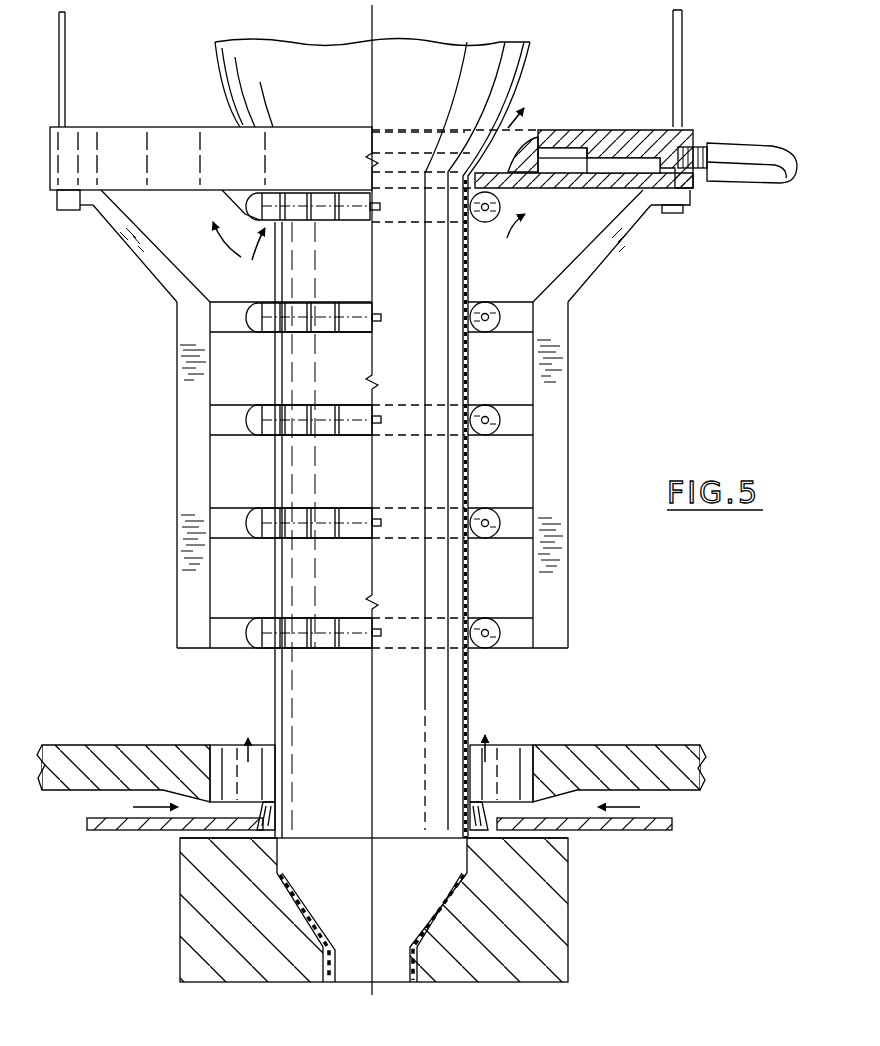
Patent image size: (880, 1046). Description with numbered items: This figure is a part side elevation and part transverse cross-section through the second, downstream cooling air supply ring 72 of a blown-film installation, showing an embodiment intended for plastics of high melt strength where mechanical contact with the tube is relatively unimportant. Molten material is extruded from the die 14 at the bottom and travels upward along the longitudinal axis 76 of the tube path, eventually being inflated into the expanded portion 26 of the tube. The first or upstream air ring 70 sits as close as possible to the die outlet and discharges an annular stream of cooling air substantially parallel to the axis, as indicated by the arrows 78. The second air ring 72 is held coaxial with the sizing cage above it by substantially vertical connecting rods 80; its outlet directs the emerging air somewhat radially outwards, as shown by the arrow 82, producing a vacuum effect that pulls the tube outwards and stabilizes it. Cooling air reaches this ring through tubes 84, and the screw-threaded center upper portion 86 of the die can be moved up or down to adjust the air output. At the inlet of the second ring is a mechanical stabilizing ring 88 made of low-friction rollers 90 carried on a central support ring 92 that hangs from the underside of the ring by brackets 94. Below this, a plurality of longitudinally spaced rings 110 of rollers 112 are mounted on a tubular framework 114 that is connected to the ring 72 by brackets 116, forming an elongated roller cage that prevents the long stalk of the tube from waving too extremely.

The die 14 is at (556, 877).
The expanded portion of the tube 26 is at (530, 50).
The first cooling air supply ring 70 is at (556, 748).
The second cooling air supply ring 72 is at (620, 130).
The longitudinal axis of the tube path 76 is at (372, 25).
The arrows indicating cooling air stream 78 is at (248, 730).
The connecting rods 80 is at (66, 48).
The arrow indicating air direction 82 is at (528, 114).
The tubes 84 is at (730, 147).
The center upper portion of the die 86 is at (541, 136).
The mechanical stabilizing ring 88 is at (242, 253).
The rollers 90 is at (485, 222).
The central support ring 92 is at (491, 214).
The brackets 94 is at (238, 195).
The rings of rollers 110 is at (524, 288).
The rollers 112 is at (490, 405).
The tubular framework 114 is at (567, 382).
The brackets 116 is at (617, 247).